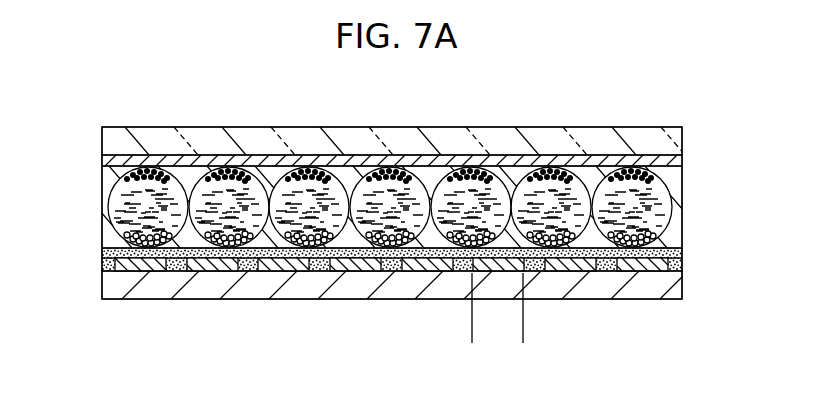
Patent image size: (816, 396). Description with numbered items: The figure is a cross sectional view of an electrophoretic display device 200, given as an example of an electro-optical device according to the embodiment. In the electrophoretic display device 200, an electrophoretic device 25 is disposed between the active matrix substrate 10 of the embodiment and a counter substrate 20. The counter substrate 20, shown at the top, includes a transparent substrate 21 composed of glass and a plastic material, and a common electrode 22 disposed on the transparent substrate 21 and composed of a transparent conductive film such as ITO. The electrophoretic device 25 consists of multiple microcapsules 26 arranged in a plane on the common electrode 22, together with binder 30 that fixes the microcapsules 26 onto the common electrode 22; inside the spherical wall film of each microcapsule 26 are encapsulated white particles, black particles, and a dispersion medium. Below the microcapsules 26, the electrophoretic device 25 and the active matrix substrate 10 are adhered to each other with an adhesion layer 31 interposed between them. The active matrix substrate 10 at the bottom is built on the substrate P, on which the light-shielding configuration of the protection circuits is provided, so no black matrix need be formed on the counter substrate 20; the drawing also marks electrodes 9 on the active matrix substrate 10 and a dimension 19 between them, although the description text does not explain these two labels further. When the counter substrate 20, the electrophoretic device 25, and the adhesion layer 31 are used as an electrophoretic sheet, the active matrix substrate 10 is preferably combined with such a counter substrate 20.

The electrophoretic display device 200 is at (580, 106).
The counter substrate 20 is at (96, 126).
The transparent substrate 21 is at (682, 136).
The common electrode 22 is at (682, 162).
The electrophoretic device 25 is at (96, 168).
The microcapsule 26 is at (683, 207).
The binder 30 is at (675, 234).
The active matrix substrate 10 is at (96, 258).
The adhesion layer 31 is at (675, 263).
The pixel electrode 9 is at (472, 262).
The pixel electrode width 19 is at (515, 328).
The substrate P is at (676, 292).